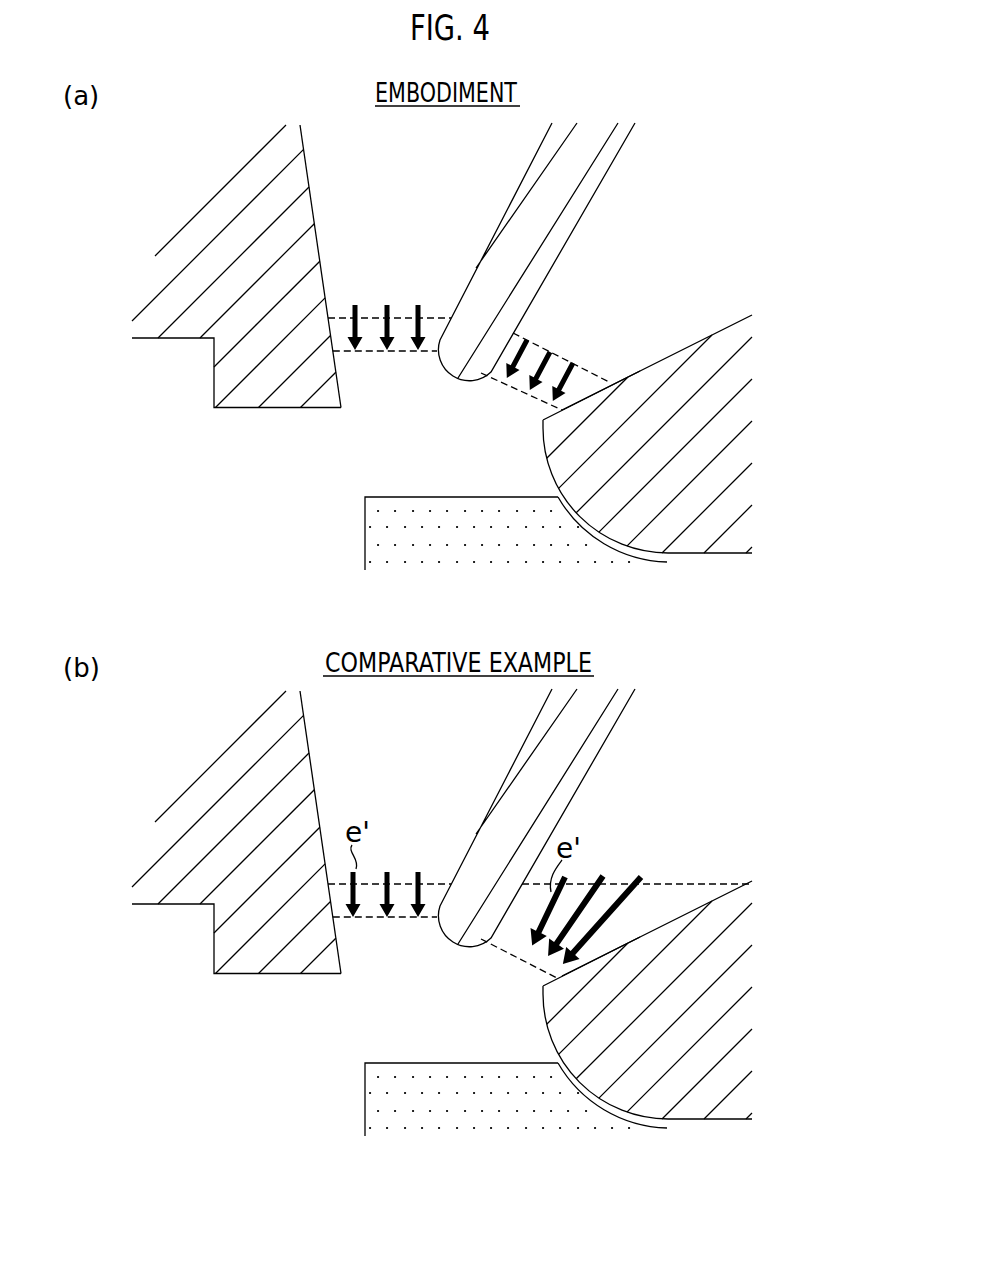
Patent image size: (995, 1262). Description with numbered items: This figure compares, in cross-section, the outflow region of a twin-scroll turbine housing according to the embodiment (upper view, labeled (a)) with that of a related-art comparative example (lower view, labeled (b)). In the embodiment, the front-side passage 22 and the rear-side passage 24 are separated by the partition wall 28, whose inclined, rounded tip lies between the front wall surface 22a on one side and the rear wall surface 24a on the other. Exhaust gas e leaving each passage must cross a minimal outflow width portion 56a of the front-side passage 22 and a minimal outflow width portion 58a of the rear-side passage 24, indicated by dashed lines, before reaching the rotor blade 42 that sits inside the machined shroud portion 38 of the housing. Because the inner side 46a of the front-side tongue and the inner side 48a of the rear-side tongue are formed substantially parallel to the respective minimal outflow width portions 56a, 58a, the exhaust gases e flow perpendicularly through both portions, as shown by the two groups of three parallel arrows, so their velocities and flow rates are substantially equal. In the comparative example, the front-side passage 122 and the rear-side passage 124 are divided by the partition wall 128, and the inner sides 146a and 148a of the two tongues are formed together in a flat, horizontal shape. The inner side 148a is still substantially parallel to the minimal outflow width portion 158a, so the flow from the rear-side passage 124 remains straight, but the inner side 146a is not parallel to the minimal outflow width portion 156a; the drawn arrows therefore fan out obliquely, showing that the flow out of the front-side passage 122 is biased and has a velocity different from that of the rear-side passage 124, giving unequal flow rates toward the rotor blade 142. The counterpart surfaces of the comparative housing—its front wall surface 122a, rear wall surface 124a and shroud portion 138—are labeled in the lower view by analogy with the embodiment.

The front-side passage 22 is at (695, 232).
The front wall surface 22a is at (734, 323).
The rear-side passage 24 is at (409, 163).
The rear wall surface 24a is at (313, 221).
The partition wall 28 is at (544, 231).
The shroud portion 38 is at (688, 508).
The rotor blade 42 is at (514, 556).
The inner side of front-side tongue 46a is at (571, 358).
The inner side of rear-side tongue 48a is at (398, 316).
The minimal outflow width portion of front-side passage 56a is at (534, 398).
The minimal outflow width portion of rear-side passage 58a is at (375, 353).
The exhaust gas e is at (354, 303).
The front-side passage 122 is at (717, 797).
The inclined surface (comparative example) 122a is at (698, 907).
The rear-side passage 124 is at (420, 732).
The side surface (comparative example) 124a is at (313, 787).
The partition wall 128 is at (553, 793).
The coating layer (comparative example) 138 is at (695, 1063).
The rotor blade 142 is at (494, 1119).
The inner side of front-side tongue 146a is at (658, 882).
The inner side of rear-side tongue 148a is at (398, 882).
The minimal outflow width portion of front-side passage 156a is at (527, 961).
The minimal outflow width portion of rear-side passage 158a is at (375, 919).